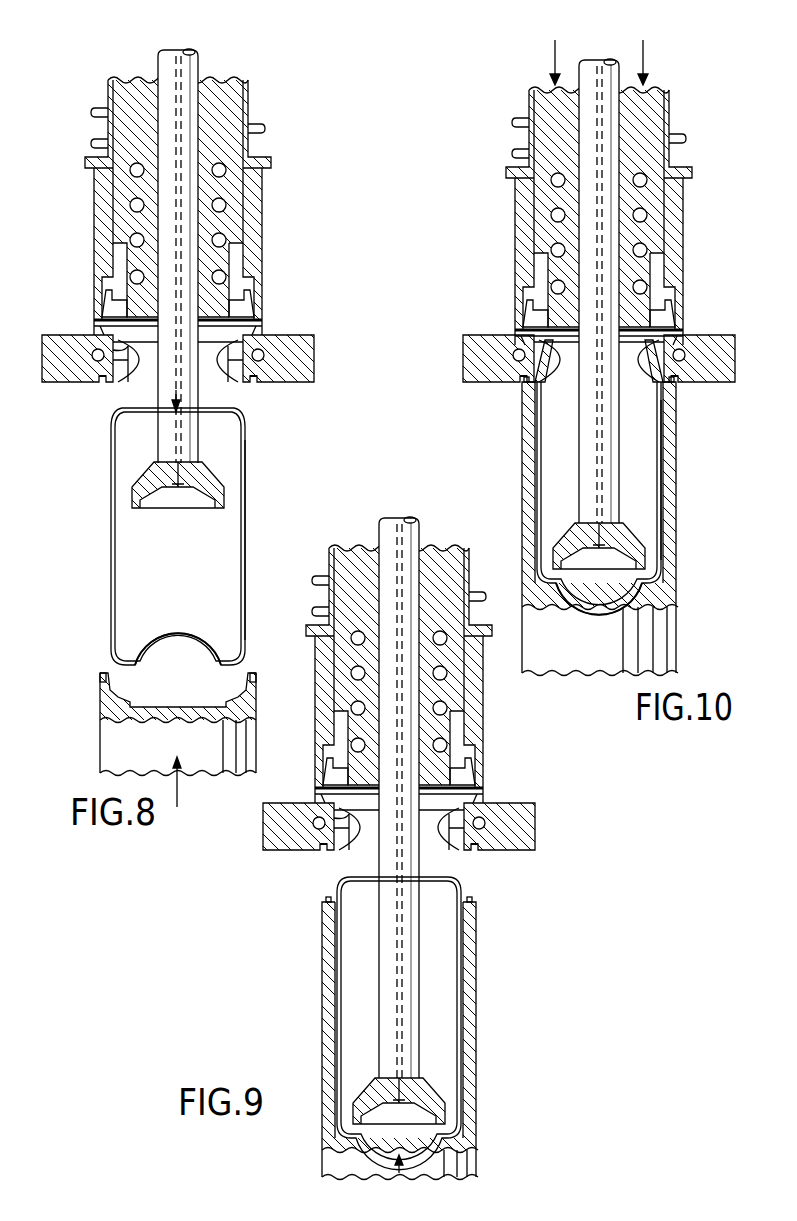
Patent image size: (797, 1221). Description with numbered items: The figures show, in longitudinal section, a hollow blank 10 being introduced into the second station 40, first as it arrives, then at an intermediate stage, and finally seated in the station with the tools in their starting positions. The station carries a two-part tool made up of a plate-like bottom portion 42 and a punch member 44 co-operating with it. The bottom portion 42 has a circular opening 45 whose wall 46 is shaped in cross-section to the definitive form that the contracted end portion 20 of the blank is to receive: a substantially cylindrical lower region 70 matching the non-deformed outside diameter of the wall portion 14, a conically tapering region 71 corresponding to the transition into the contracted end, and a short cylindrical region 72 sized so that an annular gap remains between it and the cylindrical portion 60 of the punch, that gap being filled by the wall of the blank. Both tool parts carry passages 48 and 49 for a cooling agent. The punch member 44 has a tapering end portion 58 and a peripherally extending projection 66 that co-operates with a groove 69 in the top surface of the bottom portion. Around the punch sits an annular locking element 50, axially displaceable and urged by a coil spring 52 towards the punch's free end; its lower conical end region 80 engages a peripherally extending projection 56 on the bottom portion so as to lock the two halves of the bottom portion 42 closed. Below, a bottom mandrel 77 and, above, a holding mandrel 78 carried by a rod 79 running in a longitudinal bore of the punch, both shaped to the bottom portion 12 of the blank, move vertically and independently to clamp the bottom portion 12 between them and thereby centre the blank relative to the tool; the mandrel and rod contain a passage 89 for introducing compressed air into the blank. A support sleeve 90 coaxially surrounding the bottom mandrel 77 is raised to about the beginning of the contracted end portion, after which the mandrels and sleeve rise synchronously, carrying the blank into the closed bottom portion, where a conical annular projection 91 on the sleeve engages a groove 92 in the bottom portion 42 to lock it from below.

In FIG. 8, the blank 10 is at (212, 536).
In FIG. 9, the blank 10 is at (462, 1062).
In FIG. 10, the blank 10 is at (622, 498).
In FIG. 8, the bottom portion 12 is at (177, 630).
In FIG. 10, the bottom portion 12 is at (570, 556).
In FIG. 8, the wall portion 14 is at (246, 450).
In FIG. 10, the wall portion 14 is at (662, 468).
In FIG. 10, the end portion 20 is at (562, 358).
In FIG. 8, the second station 40 is at (398, 610).
In FIG. 9, the second station 40 is at (398, 794).
In FIG. 8, the bottom portion 42 is at (300, 372).
In FIG. 9, the bottom portion 42 is at (521, 840).
In FIG. 10, the bottom portion 42 is at (398, 610).
In FIG. 8, the punch member 44 is at (240, 255).
In FIG. 9, the punch member 44 is at (462, 728).
In FIG. 8, the opening 45 is at (213, 400).
In FIG. 9, the opening 45 is at (432, 870).
In FIG. 8, the wall 46 is at (235, 372).
In FIG. 8, the passage 48 is at (252, 352).
In FIG. 8, the passage 49 is at (235, 235).
In FIG. 8, the annular locking element 50 is at (258, 180).
In FIG. 9, the annular locking element 50 is at (480, 655).
In FIG. 10, the annular locking element 50 is at (676, 200).
In FIG. 8, the coil spring 52 is at (259, 125).
In FIG. 9, the coil spring 52 is at (480, 592).
In FIG. 8, the projection 56 is at (262, 328).
In FIG. 10, the projection 56 is at (670, 342).
In FIG. 8, the end portion 58 is at (96, 324).
In FIG. 8, the cylindrical portion 60 is at (258, 304).
In FIG. 8, the projection 66 is at (106, 296).
In FIG. 10, the projection 66 is at (523, 298).
In FIG. 8, the groove 69 is at (262, 358).
In FIG. 9, the groove 69 is at (480, 826).
In FIG. 10, the groove 69 is at (520, 372).
In FIG. 8, the region 70 is at (120, 352).
In FIG. 9, the region 70 is at (345, 830).
In FIG. 8, the region 71 is at (122, 362).
In FIG. 8, the region 72 is at (130, 365).
In FIG. 8, the bottom mandrel 77 is at (106, 690).
In FIG. 9, the bottom mandrel 77 is at (330, 1132).
In FIG. 10, the bottom mandrel 77 is at (662, 585).
In FIG. 8, the holding mandrel 78 is at (142, 480).
In FIG. 9, the holding mandrel 78 is at (366, 1090).
In FIG. 10, the holding mandrel 78 is at (640, 535).
In FIG. 8, the rod 79 is at (211, 236).
In FIG. 9, the rod 79 is at (395, 791).
In FIG. 10, the rod 79 is at (649, 275).
In FIG. 8, the end region 80 is at (256, 297).
In FIG. 8, the passage 89 is at (183, 118).
In FIG. 9, the passage 89 is at (400, 592).
In FIG. 10, the passage 89 is at (600, 140).
In FIG. 8, the support sleeve 90 is at (398, 610).
In FIG. 9, the support sleeve 90 is at (398, 610).
In FIG. 10, the support sleeve 90 is at (398, 610).
In FIG. 8, the annular projection 91 is at (252, 673).
In FIG. 9, the annular projection 91 is at (328, 905).
In FIG. 10, the annular projection 91 is at (673, 416).
In FIG. 8, the groove 92 is at (103, 374).
In FIG. 9, the groove 92 is at (321, 843).
In FIG. 10, the groove 92 is at (672, 372).